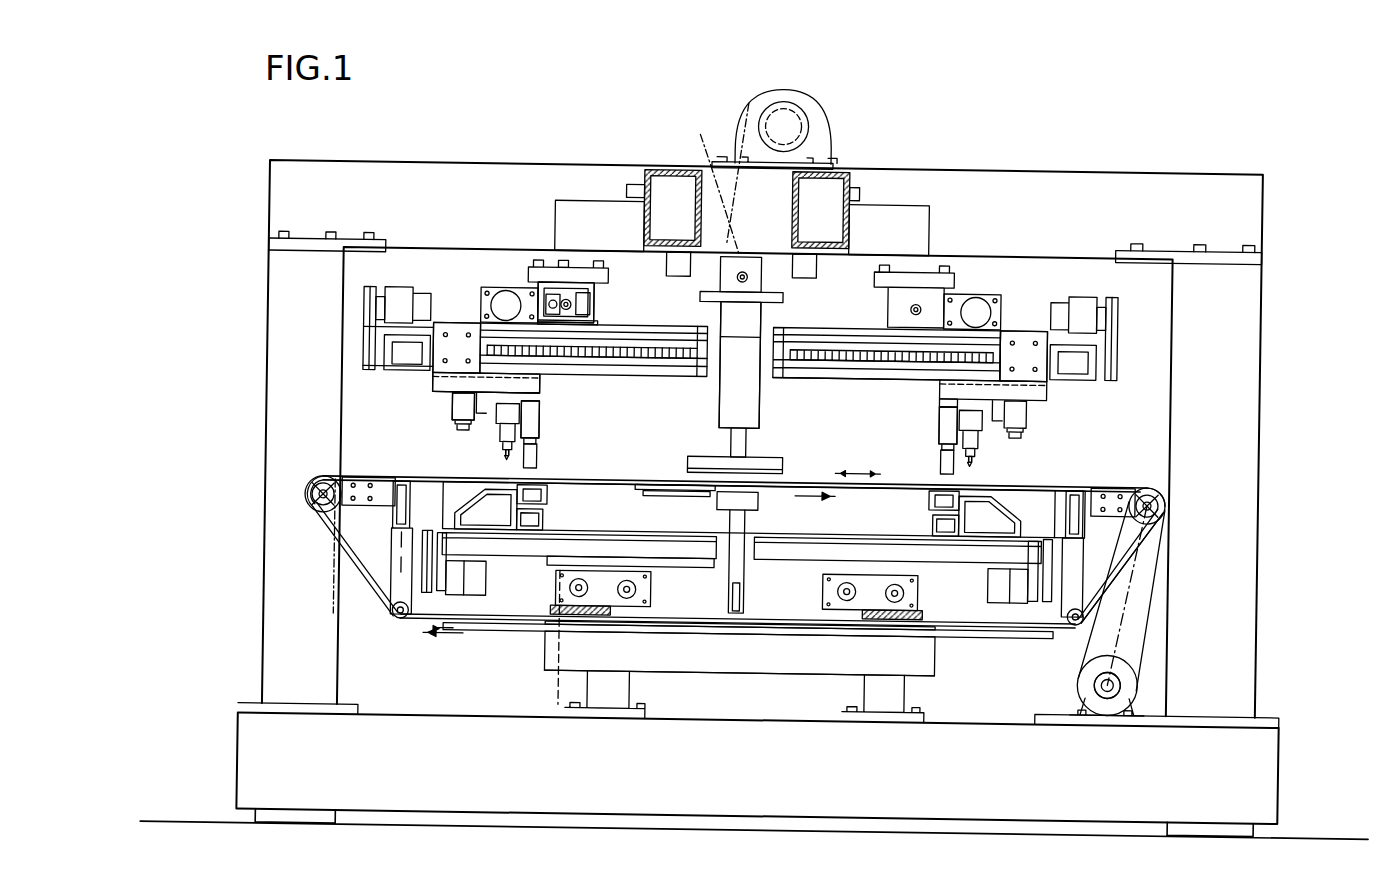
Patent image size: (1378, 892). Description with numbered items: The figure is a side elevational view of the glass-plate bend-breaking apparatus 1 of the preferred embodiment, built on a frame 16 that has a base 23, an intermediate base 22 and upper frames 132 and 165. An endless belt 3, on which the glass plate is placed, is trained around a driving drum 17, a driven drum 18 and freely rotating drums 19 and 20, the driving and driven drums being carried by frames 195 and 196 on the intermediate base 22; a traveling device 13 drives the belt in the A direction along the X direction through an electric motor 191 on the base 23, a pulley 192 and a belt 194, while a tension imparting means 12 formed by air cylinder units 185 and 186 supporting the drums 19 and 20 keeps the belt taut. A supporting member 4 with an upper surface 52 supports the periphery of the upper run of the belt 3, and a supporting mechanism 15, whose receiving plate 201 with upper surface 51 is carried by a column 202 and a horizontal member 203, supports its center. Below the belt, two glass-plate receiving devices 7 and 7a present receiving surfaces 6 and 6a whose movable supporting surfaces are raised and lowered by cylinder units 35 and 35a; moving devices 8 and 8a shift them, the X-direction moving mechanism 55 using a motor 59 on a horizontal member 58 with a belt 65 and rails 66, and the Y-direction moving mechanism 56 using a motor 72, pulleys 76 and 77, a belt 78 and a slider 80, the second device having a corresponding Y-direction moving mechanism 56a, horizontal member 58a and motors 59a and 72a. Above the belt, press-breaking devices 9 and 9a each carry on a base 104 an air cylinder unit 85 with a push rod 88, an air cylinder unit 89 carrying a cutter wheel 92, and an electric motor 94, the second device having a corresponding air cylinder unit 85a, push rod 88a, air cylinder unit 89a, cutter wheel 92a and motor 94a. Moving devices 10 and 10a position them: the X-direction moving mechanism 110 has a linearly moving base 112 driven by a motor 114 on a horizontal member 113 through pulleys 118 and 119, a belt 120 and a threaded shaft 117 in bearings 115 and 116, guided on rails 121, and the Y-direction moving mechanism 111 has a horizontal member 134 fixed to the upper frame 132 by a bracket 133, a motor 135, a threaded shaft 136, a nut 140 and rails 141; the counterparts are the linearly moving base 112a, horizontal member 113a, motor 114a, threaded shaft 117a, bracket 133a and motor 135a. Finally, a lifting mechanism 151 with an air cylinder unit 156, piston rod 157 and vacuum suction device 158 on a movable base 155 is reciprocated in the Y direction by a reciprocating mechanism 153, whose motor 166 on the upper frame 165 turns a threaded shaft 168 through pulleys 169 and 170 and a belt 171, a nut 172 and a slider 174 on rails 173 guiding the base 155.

The component mounting apparatus 1 is at (1268, 394).
The endless belt 3 is at (1063, 476).
The supporting member 4 is at (416, 492).
The glass-plate receiving surface 6 is at (530, 480).
The glass-plate receiving surface 6a is at (955, 482).
The glass-plate receiving device 7 is at (566, 509).
The glass-plate receiving device 7a is at (925, 512).
The moving device 8 is at (525, 621).
The moving device 8a is at (955, 625).
The press-breaking device 9 is at (556, 430).
The press-breaking device 9a is at (935, 399).
The moving device 10 is at (465, 284).
The moving device 10a is at (1011, 267).
The tension imparting means 12 is at (1079, 630).
The traveling device 13 is at (1155, 640).
The supporting mechanism 15 is at (729, 567).
The frame 16 is at (1272, 682).
The driving drum 17 is at (1164, 480).
The driven drum 18 is at (323, 512).
The freely rotating drum 19 is at (1082, 614).
The freely rotating drum 20 is at (415, 625).
The intermediate base 22 is at (733, 667).
The base 23 is at (1283, 762).
The cylinder unit 35 is at (538, 526).
The cylinder unit 35a is at (950, 526).
The upper surface 51 is at (652, 478).
The upper surface 52 is at (410, 478).
The X-direction moving mechanism 55 is at (455, 626).
The Y-direction moving mechanism 56 is at (600, 605).
The Y-direction moving mechanism 56a is at (832, 600).
The horizontal member 58 is at (620, 530).
The horizontal member 58a is at (782, 530).
The electric motor 59 is at (478, 596).
The electric motor 59a is at (993, 590).
The belt 65 is at (428, 560).
The rails 66 is at (668, 490).
The electric motor 72 is at (620, 600).
The electric motor 72a is at (853, 605).
The pulley 76 is at (660, 566).
The pulley 77 is at (556, 639).
The belt 78 is at (588, 612).
The slider 80 is at (550, 611).
The air cylinder unit 85 is at (543, 412).
The air cylinder unit 85a is at (943, 420).
The push rod 88 is at (541, 452).
The push rod 88a is at (945, 452).
The air cylinder unit 89 is at (500, 415).
The air cylinder unit 89a is at (990, 425).
The cutter wheel 92 is at (508, 454).
The cutter wheel 92a is at (978, 454).
The electric motor 94 is at (456, 396).
The electric motor 94a is at (1030, 398).
The base 104 is at (543, 380).
The X-direction moving mechanism 110 is at (373, 382).
The Y-direction moving mechanism 111 is at (610, 321).
The X-direction linearly moving base 112 is at (450, 365).
The X-direction linearly moving base 112a is at (1035, 360).
The horizontal member 113 is at (700, 372).
The horizontal member 113a is at (845, 370).
The electric motor 114 is at (400, 290).
The electric motor 114a is at (1085, 300).
The bearing 115 is at (390, 345).
The bearing 116 is at (695, 356).
The threaded shaft 117 is at (605, 375).
The threaded shaft 117a is at (860, 371).
The pulley 118 is at (368, 290).
The pulley 119 is at (380, 356).
The belt 120 is at (372, 320).
The rails 121 is at (660, 352).
The upper frame 132 is at (660, 164).
The bracket 133 is at (590, 196).
The bracket 133a is at (930, 215).
The horizontal member 134 is at (580, 280).
The electric motor 135 is at (505, 300).
The electric motor 135a is at (980, 300).
The threaded shaft 136 is at (566, 255).
The nut 140 is at (605, 305).
The rails 141 is at (552, 292).
The lifting mechanism 151 is at (770, 402).
The reciprocating mechanism 153 is at (823, 136).
The movable base 155 is at (785, 290).
The air cylinder unit 156 is at (765, 392).
The piston rod 157 is at (700, 456).
The vacuum suction device 158 is at (787, 458).
The upper frame 165 is at (1000, 160).
The electric motor 166 is at (797, 100).
The threaded shaft 168 is at (748, 246).
The pulley 169 is at (776, 101).
The pulley 170 is at (704, 183).
The belt 171 is at (734, 165).
The nut 172 is at (860, 186).
The rails 173 is at (575, 265).
The slider 174 is at (630, 265).
The air cylinder unit 185 is at (1130, 570).
The air cylinder unit 186 is at (402, 616).
The electric motor 191 is at (1128, 712).
The pulley 192 is at (1114, 690).
The belt 194 is at (1150, 555).
The frame 195 is at (1112, 478).
The frame 196 is at (358, 478).
The receiving plate 201 is at (722, 490).
The column 202 is at (752, 560).
The horizontal member 203 is at (760, 605).
The A direction A is at (442, 632).
The X direction X is at (858, 445).